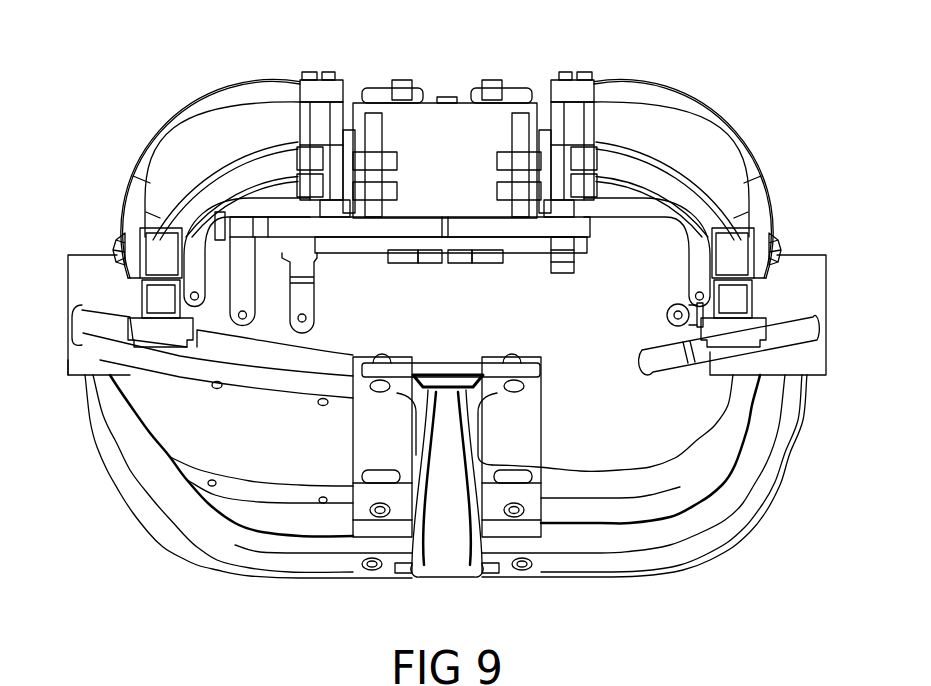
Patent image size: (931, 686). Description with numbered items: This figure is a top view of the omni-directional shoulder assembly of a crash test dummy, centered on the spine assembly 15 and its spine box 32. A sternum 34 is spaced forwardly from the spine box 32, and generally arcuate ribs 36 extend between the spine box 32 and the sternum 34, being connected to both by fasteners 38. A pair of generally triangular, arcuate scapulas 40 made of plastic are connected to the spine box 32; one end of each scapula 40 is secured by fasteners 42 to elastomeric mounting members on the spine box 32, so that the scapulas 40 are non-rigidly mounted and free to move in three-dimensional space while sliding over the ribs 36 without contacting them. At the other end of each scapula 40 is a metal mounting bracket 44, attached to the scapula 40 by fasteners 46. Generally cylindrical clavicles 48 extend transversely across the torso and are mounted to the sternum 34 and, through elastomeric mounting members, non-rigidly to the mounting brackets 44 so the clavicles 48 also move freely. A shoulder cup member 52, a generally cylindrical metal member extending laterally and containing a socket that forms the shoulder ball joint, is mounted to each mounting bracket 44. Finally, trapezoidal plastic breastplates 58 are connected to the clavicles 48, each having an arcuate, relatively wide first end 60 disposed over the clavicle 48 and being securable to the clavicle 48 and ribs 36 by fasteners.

The spine assembly 15 is at (413, 95).
The spine box 32 is at (452, 130).
The sternum 34 is at (490, 557).
The ribs 36 is at (280, 565).
The fasteners 38 is at (374, 572).
The scapulas 40 is at (190, 117).
The fasteners 42 is at (318, 72).
The mounting brackets 44 is at (160, 243).
The fasteners 46 is at (115, 247).
The clavicles 48 is at (68, 360).
The shoulder cup member 52 is at (97, 286).
The breastplates 58 is at (98, 453).
The first end 60 is at (97, 325).